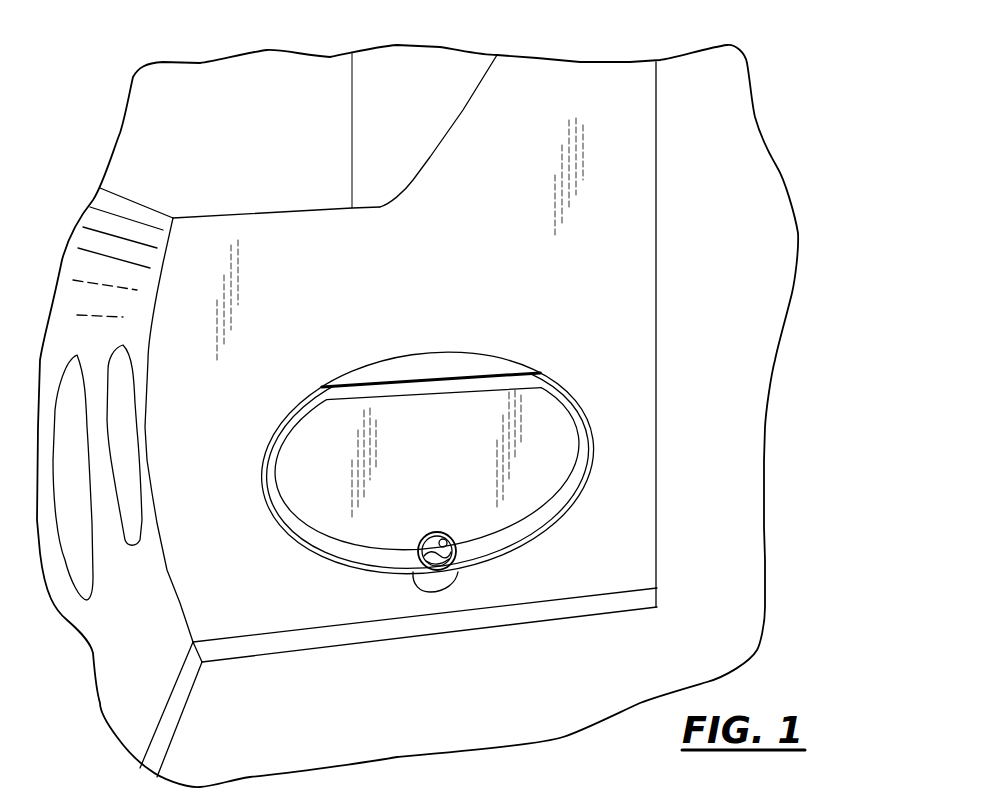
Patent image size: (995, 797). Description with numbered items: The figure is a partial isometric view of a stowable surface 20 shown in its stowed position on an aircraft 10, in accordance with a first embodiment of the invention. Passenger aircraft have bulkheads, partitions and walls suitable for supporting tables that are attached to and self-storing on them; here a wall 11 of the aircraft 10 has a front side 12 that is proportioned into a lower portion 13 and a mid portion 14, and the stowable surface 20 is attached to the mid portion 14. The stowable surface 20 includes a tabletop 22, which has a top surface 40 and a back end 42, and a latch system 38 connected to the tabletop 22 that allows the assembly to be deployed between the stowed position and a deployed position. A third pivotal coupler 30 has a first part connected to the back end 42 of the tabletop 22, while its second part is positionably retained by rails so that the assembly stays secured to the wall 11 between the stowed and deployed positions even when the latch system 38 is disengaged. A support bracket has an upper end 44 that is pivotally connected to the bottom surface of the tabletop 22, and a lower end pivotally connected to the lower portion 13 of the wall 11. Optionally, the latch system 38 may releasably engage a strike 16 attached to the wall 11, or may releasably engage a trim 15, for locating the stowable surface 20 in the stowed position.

The aircraft 10 is at (790, 462).
The wall 11 is at (530, 90).
The front side 12 is at (617, 222).
The lower portion 13 is at (637, 512).
The mid portion 14 is at (632, 345).
The trim 15 is at (403, 367).
The strike 16 is at (423, 590).
The stowable surface 20 is at (246, 415).
The tabletop 22 is at (545, 517).
The third pivotal coupler 30 is at (438, 375).
The latch system 38 is at (487, 576).
The top surface 40 is at (567, 433).
The back end 42 is at (510, 387).
The upper end 44 is at (272, 574).